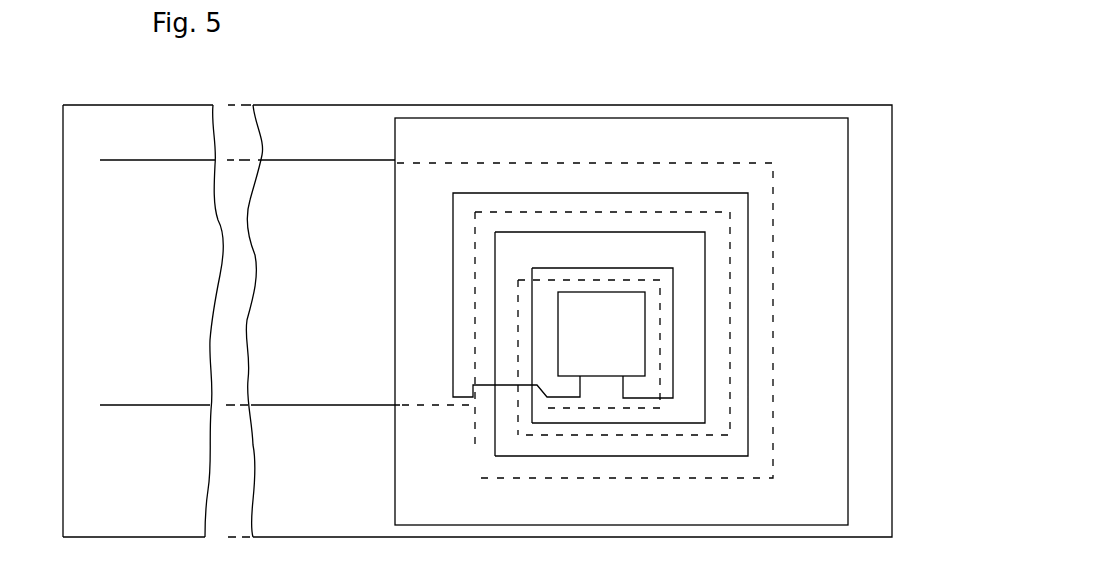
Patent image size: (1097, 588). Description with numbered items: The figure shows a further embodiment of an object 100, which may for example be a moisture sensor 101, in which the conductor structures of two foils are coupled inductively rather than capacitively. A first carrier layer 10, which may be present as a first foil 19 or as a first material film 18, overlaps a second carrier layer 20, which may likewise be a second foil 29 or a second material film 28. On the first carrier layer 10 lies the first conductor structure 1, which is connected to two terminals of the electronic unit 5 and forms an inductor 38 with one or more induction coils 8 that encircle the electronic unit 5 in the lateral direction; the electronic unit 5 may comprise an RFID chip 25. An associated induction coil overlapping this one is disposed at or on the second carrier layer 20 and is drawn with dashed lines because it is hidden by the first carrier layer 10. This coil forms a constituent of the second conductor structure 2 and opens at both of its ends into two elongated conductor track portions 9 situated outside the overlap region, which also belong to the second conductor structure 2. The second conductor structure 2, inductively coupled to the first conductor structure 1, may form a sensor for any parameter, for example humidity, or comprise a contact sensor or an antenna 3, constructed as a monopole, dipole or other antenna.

The first conductor structure 1 is at (705, 307).
The second conductor structure 2 is at (285, 282).
The antenna 3 is at (285, 282).
The conductor track 9 is at (125, 163).
The electronic unit 5 is at (601, 334).
The RFID chip 25 is at (601, 334).
The induction coil 8 is at (685, 345).
The inductor 38 is at (673, 365).
The first carrier layer 10 is at (621, 296).
The first material film 18 is at (621, 296).
The first foil 19 is at (537, 118).
The second carrier layer 20 is at (477, 291).
The second material film 28 is at (597, 410).
The second foil 29 is at (455, 104).
The object 100 is at (512, 291).
The moisture sensor 101 is at (822, 92).